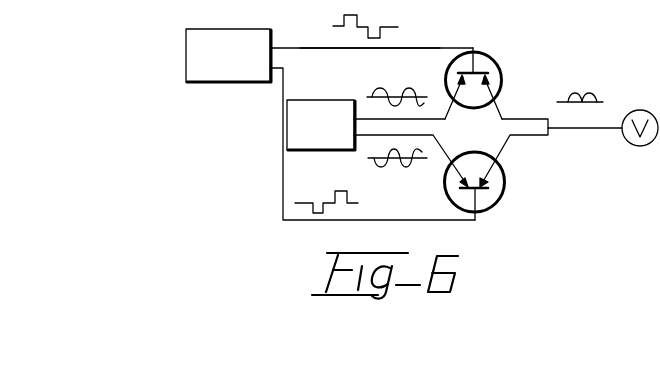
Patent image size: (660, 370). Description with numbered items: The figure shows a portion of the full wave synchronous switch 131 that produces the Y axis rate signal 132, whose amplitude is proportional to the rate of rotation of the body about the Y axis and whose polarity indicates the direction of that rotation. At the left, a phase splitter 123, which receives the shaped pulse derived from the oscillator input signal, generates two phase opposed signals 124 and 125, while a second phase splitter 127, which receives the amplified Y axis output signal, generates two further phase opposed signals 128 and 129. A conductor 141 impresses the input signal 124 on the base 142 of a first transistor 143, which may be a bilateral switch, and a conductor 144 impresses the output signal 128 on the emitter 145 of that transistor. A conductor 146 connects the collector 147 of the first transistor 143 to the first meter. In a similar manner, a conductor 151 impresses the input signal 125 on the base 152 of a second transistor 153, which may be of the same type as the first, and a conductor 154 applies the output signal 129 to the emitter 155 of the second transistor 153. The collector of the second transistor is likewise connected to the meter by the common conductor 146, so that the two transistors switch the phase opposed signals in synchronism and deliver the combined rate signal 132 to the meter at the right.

The phase splitter 123 is at (237, 83).
The phase opposed signal 124 is at (349, 15).
The phase opposed signal 125 is at (360, 203).
The phase splitter 127 is at (327, 151).
The phase opposed signal 128 is at (380, 86).
The phase opposed signal 129 is at (402, 172).
The full wave synchronous switch 131 is at (425, 42).
The rate signal 132 is at (580, 96).
The conductor 141 is at (309, 46).
The base 142 is at (460, 70).
The first transistor 143 is at (502, 60).
The conductor 144 is at (366, 117).
The emitter 145 is at (446, 86).
The conductor 146 is at (513, 119).
The collector 147 is at (503, 90).
The conductor 151 is at (283, 166).
The base 152 is at (477, 205).
The second transistor 153 is at (508, 182).
The conductor 154 is at (432, 138).
The emitter 155 is at (458, 170).